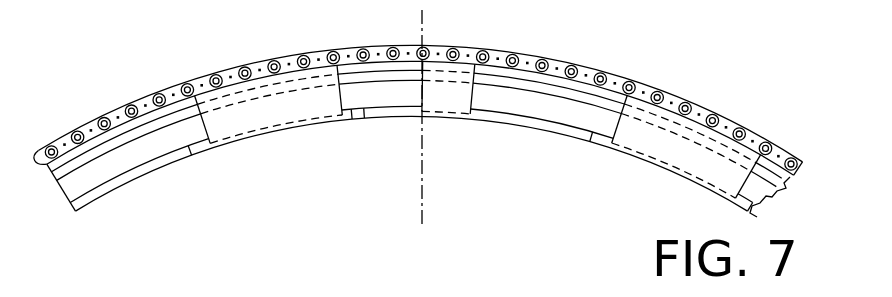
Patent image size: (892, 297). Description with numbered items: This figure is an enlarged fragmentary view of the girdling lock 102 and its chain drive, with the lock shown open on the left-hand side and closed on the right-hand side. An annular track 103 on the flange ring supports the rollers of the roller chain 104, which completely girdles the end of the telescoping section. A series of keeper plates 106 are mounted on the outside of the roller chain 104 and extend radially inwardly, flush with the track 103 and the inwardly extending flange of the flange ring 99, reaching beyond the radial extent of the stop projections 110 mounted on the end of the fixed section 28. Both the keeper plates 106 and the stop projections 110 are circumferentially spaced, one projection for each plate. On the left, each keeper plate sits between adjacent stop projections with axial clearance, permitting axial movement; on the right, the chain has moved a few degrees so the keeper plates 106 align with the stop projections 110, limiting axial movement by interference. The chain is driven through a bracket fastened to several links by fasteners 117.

The fixed section 28 is at (762, 200).
The flange ring 99 is at (176, 142).
The girdling lock 102 is at (716, 99).
The annular track 103 is at (525, 78).
The roller chain 104 is at (614, 66).
The keeper plates 106 is at (318, 136).
The stop projections 110 is at (128, 178).
The fasteners 117 is at (167, 292).